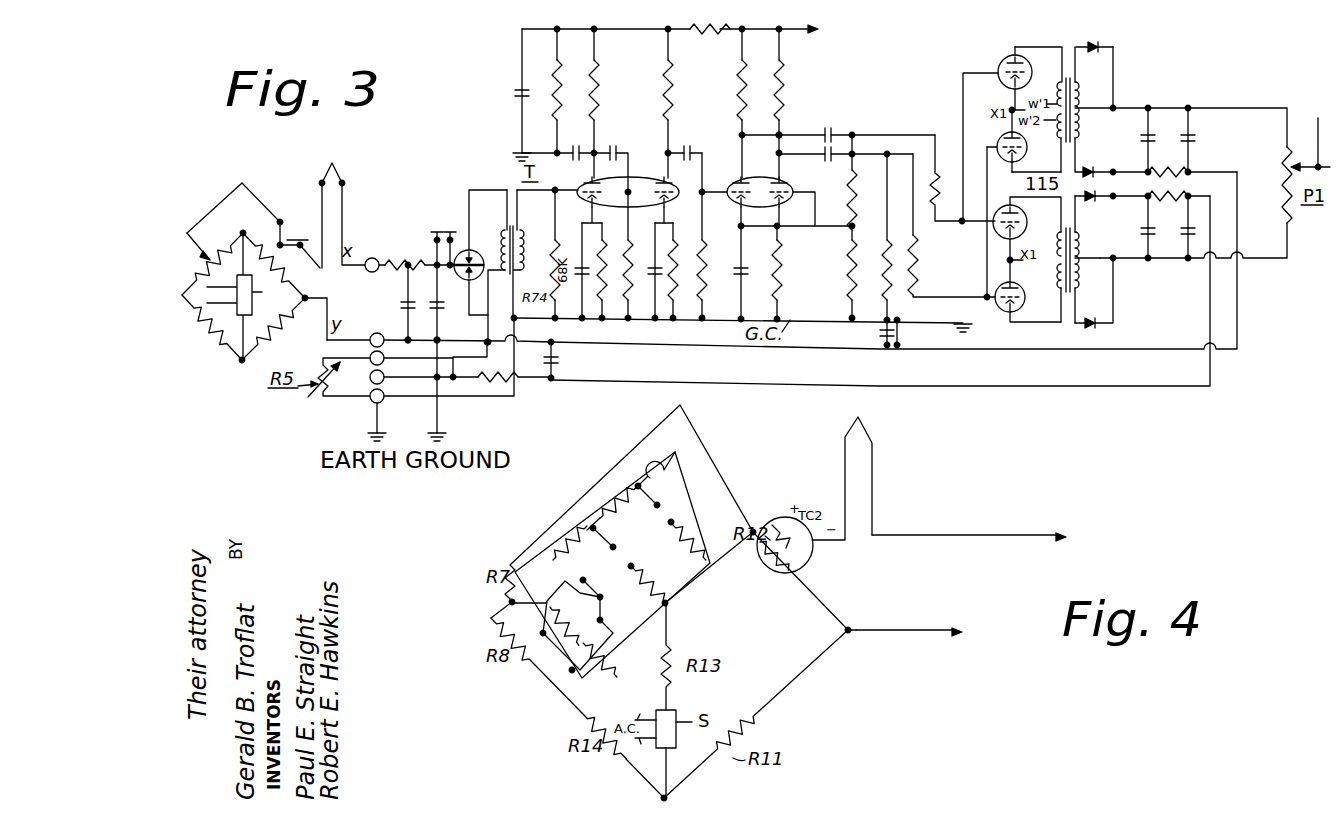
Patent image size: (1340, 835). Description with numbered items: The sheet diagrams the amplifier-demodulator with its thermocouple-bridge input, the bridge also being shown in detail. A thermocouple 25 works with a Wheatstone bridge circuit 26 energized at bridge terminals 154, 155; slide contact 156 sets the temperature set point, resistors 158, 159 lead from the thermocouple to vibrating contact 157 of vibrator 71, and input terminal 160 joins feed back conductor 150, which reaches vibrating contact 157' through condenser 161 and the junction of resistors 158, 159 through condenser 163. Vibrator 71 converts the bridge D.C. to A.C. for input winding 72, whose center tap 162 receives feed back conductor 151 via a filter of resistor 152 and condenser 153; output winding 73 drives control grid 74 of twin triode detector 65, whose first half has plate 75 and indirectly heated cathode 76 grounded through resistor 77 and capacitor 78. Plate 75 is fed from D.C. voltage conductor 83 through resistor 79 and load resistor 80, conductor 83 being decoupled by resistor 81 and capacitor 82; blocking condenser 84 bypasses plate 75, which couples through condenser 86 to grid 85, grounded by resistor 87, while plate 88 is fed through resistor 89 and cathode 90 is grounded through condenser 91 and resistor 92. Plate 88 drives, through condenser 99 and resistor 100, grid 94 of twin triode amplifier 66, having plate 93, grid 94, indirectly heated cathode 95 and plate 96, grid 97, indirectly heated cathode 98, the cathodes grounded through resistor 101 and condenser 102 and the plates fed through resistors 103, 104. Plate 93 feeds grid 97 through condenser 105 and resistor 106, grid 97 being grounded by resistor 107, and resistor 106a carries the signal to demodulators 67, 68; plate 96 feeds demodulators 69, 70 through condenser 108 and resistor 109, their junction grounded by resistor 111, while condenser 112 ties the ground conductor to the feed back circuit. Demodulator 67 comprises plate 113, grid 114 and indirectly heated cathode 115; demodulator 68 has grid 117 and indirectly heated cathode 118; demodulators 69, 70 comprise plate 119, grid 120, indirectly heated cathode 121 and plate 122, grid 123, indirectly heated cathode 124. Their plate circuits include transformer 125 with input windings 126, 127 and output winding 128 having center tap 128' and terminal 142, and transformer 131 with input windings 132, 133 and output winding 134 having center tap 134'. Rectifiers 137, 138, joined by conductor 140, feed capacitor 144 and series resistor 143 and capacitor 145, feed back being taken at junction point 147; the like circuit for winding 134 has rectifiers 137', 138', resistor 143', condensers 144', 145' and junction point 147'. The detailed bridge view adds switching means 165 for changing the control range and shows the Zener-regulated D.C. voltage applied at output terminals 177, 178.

In FIG. 3, the thermocouple 25 is at (327, 168).
In FIG. 4, the thermocouple 25 is at (872, 425).
In FIG. 3, the Wheatstone bridge circuit 26 is at (309, 359).
In FIG. 3, the twin triode detector 65 is at (657, 176).
In FIG. 3, the twin triode amplifier 66 is at (770, 171).
In FIG. 3, the demodulator 67 is at (1003, 59).
In FIG. 3, the demodulator 68 is at (1028, 216).
In FIG. 3, the demodulator 69 is at (1002, 138).
In FIG. 3, the demodulator 70 is at (1025, 307).
In FIG. 3, the vibrator 71 is at (461, 230).
In FIG. 3, the input winding 72 is at (501, 226).
In FIG. 3, the output winding 73 is at (522, 249).
In FIG. 3, the control grid 74 is at (578, 188).
In FIG. 3, the plate 75 is at (594, 174).
In FIG. 3, the indirectly heated cathode 76 is at (590, 205).
In FIG. 3, the resistor 77 is at (618, 252).
In FIG. 3, the capacitor 78 is at (580, 278).
In FIG. 3, the resistor 79 is at (716, 40).
In FIG. 3, the load resistor 80 is at (598, 92).
In FIG. 3, the resistor 81 is at (555, 72).
In FIG. 3, the capacitor 82 is at (517, 92).
In FIG. 3, the D.C. voltage conductor 83 is at (642, 42).
In FIG. 3, the blocking condenser 84 is at (583, 140).
In FIG. 3, the grid 85 is at (661, 209).
In FIG. 3, the condenser 86 is at (616, 150).
In FIG. 3, the resistor 87 is at (629, 286).
In FIG. 3, the plate 88 is at (671, 174).
In FIG. 3, the resistor 89 is at (673, 98).
In FIG. 3, the cathode 90 is at (668, 214).
In FIG. 3, the condenser 91 is at (653, 260).
In FIG. 3, the resistor 92 is at (674, 256).
In FIG. 3, the plate 93 is at (736, 180).
In FIG. 3, the grid 94 is at (732, 200).
In FIG. 3, the indirectly heated cathode 95 is at (742, 211).
In FIG. 3, the plate 96 is at (780, 176).
In FIG. 3, the grid 97 is at (790, 192).
In FIG. 3, the indirectly heated cathode 98 is at (781, 213).
In FIG. 3, the condenser 99 is at (694, 148).
In FIG. 3, the resistor 100 is at (722, 252).
In FIG. 3, the resistor 101 is at (778, 264).
In FIG. 3, the condenser 102 is at (739, 275).
In FIG. 3, the resistor 103 is at (739, 84).
In FIG. 3, the resistor 104 is at (787, 82).
In FIG. 3, the condenser 105 is at (826, 133).
In FIG. 3, the resistor 106 is at (851, 190).
In FIG. 3, the resistor 106a is at (934, 214).
In FIG. 3, the resistor 107 is at (850, 282).
In FIG. 3, the condenser 108 is at (824, 153).
In FIG. 3, the resistor 109 is at (911, 292).
In FIG. 3, the resistor 111 is at (885, 260).
In FIG. 3, the condenser 112 is at (878, 336).
In FIG. 3, the plate 113 is at (998, 70).
In FIG. 3, the grid 114 is at (1010, 82).
In FIG. 3, the indirectly heated cathode 115 is at (1008, 93).
In FIG. 3, the grid 117 is at (1006, 240).
In FIG. 3, the indirectly heated cathode 118 is at (1001, 251).
In FIG. 3, the plate 119 is at (1011, 170).
In FIG. 3, the grid 120 is at (1017, 161).
In FIG. 3, the indirectly heated cathode 121 is at (983, 144).
In FIG. 3, the plate 122 is at (786, 326).
In FIG. 3, the grid 123 is at (992, 302).
In FIG. 3, the indirectly heated cathode 124 is at (986, 294).
In FIG. 3, the transformer 125 is at (1083, 45).
In FIG. 3, the input winding 126 is at (1056, 89).
In FIG. 3, the input winding 127 is at (1056, 138).
In FIG. 3, the output winding 128 is at (1095, 92).
In FIG. 3, the center tap 128' is at (1131, 97).
In FIG. 3, the transformer 131 is at (1100, 318).
In FIG. 3, the input winding 132 is at (1058, 237).
In FIG. 3, the input winding 133 is at (1058, 282).
In FIG. 3, the output winding 134 is at (1113, 259).
In FIG. 3, the center tap 134' is at (1096, 239).
In FIG. 3, the rectifier 137 is at (1113, 37).
In FIG. 3, the rectifier 137' is at (1111, 207).
In FIG. 3, the rectifier 138 is at (1104, 181).
In FIG. 3, the rectifier 138' is at (1086, 303).
In FIG. 3, the conductor 140 is at (1113, 78).
In FIG. 3, the terminal 142 is at (1073, 148).
In FIG. 3, the resistor 143 is at (1168, 159).
In FIG. 3, the resistor 143' is at (1161, 188).
In FIG. 3, the capacitor 144 is at (1135, 141).
In FIG. 3, the condenser 144' is at (1134, 228).
In FIG. 3, the capacitor 145 is at (1205, 140).
In FIG. 3, the condenser 145' is at (1173, 228).
In FIG. 3, the junction point 147 is at (1237, 140).
In FIG. 3, the junction point 147' is at (1193, 253).
In FIG. 3, the feed back conductor 150 is at (755, 346).
In FIG. 4, the feed back conductor 150 is at (918, 635).
In FIG. 3, the feed back conductor 151 is at (813, 384).
In FIG. 3, the resistor 152 is at (489, 374).
In FIG. 3, the condenser 153 is at (563, 358).
In FIG. 3, the bridge terminal 154 is at (248, 226).
In FIG. 3, the bridge terminal 155 is at (241, 362).
In FIG. 3, the slide contact 156 is at (196, 244).
In FIG. 3, the vibrating contact 157 is at (365, 224).
In FIG. 4, the vibrating contact 157 is at (969, 523).
In FIG. 3, the vibrating contact 157' is at (472, 307).
In FIG. 3, the resistor 158 is at (376, 272).
In FIG. 3, the resistor 159 is at (418, 259).
In FIG. 3, the input terminal 160 is at (310, 297).
In FIG. 4, the input terminal 160 is at (845, 630).
In FIG. 3, the condenser 161 is at (437, 314).
In FIG. 3, the center tap 162 is at (484, 249).
In FIG. 3, the condenser 163 is at (401, 310).
In FIG. 4, the switching means 165 is at (663, 551).
In FIG. 4, the output terminal 177 is at (658, 706).
In FIG. 4, the output terminal 178 is at (664, 749).